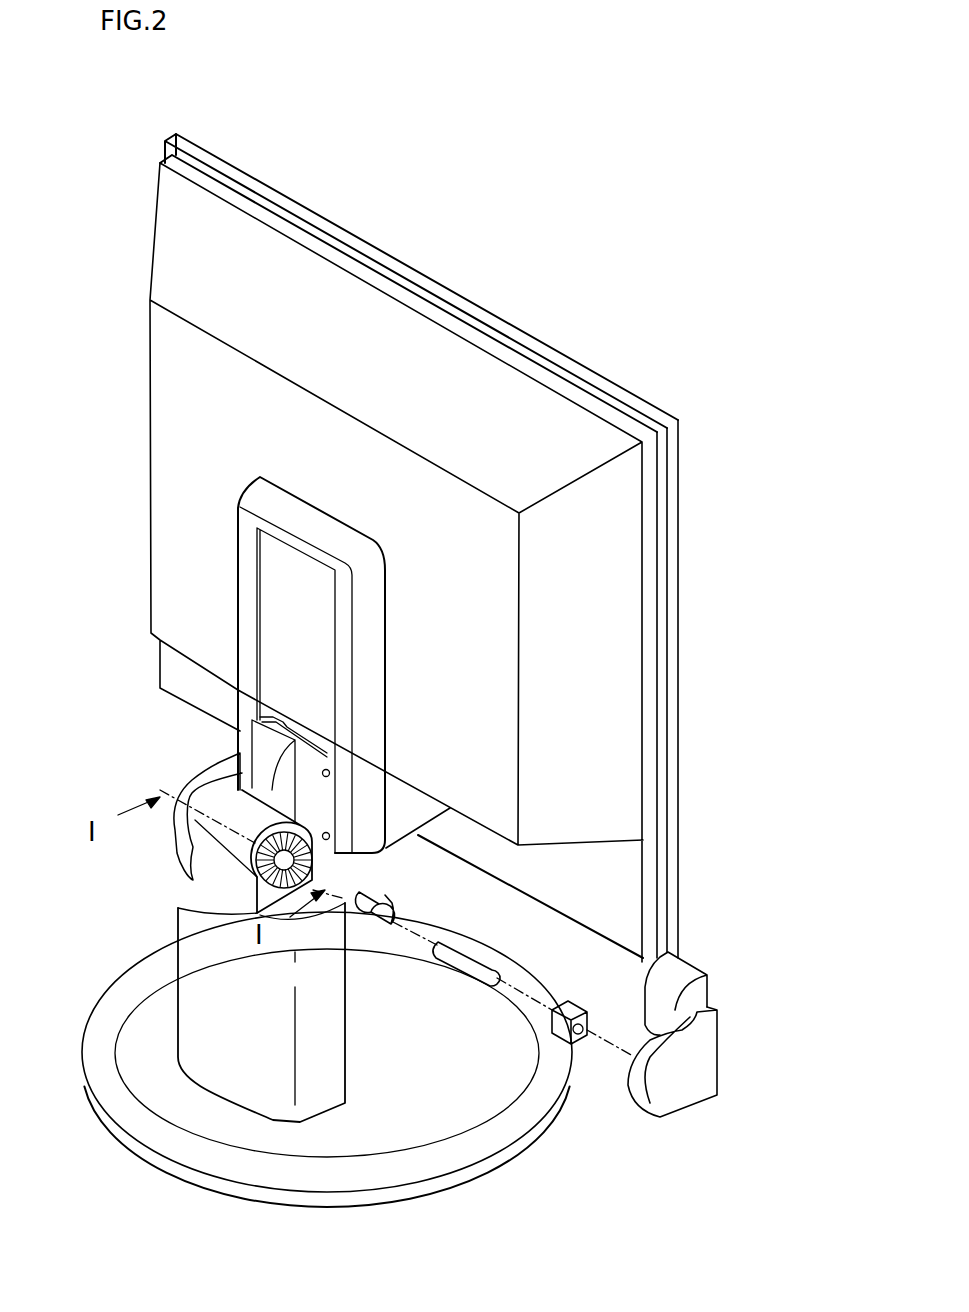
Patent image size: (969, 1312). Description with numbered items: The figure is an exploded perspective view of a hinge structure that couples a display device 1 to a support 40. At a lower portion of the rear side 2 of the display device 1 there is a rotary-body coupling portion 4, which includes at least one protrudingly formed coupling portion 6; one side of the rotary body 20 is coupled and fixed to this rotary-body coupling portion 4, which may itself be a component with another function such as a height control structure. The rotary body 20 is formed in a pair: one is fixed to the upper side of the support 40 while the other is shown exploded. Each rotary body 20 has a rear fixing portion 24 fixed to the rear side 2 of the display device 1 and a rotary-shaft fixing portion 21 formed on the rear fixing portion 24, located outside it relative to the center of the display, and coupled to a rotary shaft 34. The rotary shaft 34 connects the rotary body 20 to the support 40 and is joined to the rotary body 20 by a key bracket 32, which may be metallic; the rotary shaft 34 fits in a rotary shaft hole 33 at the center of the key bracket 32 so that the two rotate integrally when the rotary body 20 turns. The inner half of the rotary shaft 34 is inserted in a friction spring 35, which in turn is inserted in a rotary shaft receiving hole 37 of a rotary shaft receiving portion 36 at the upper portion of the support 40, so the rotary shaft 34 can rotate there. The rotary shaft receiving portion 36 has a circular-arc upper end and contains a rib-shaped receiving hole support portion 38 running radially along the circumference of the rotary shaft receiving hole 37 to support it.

The display device 1 is at (338, 308).
The rear side 2 is at (212, 450).
The rotary-body coupling portion 4 is at (247, 667).
The coupling portion 6 is at (326, 769).
The rotary body 20 is at (732, 1071).
The rotary-shaft fixing portion 21 is at (685, 1093).
The rear fixing portion 24 is at (697, 990).
The key bracket 32 is at (529, 1061).
The rotary shaft hole 33 is at (578, 1037).
The rotary shaft 34 is at (465, 960).
The friction spring 35 is at (376, 928).
The rotary shaft receiving portion 36 is at (232, 810).
The rotary shaft receiving hole 37 is at (293, 862).
The receiving hole support portion 38 is at (257, 913).
The support 40 is at (197, 997).